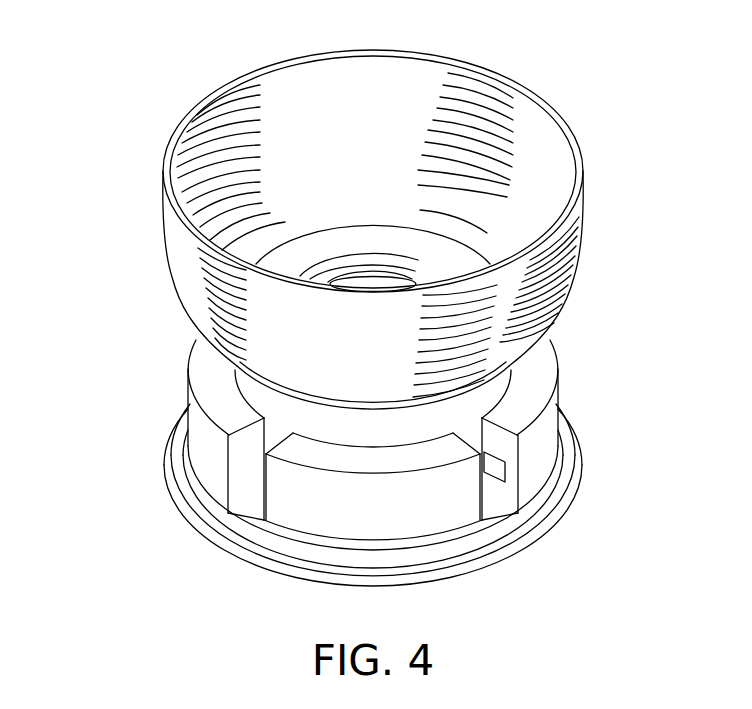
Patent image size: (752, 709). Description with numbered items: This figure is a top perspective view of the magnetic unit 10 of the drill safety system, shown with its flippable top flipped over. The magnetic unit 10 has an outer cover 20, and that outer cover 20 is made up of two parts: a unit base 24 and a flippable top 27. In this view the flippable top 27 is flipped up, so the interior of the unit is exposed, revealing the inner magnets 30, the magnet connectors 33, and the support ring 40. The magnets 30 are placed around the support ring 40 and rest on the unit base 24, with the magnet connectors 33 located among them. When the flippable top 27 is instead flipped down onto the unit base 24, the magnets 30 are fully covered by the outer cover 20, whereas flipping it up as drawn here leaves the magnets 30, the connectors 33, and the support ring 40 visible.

The magnetic unit 10 is at (109, 42).
The outer cover 20 is at (119, 271).
The unit base 24 is at (574, 530).
The flippable top 27 is at (577, 270).
The inner magnets 30 is at (292, 504).
The magnet connectors 33 is at (497, 482).
The support ring 40 is at (473, 403).